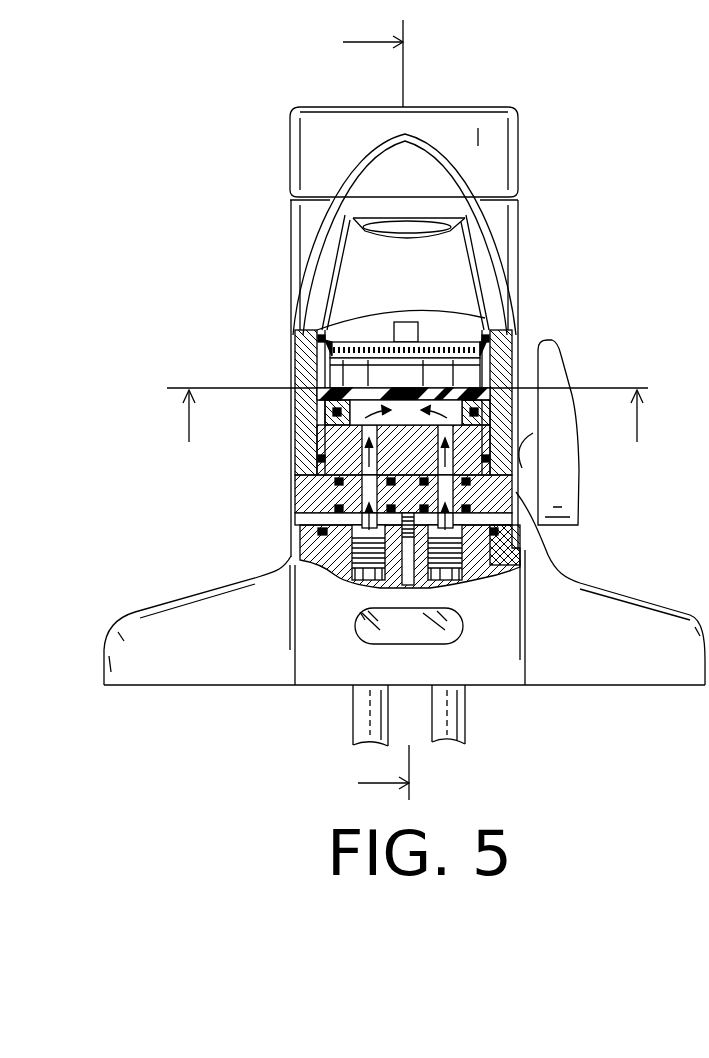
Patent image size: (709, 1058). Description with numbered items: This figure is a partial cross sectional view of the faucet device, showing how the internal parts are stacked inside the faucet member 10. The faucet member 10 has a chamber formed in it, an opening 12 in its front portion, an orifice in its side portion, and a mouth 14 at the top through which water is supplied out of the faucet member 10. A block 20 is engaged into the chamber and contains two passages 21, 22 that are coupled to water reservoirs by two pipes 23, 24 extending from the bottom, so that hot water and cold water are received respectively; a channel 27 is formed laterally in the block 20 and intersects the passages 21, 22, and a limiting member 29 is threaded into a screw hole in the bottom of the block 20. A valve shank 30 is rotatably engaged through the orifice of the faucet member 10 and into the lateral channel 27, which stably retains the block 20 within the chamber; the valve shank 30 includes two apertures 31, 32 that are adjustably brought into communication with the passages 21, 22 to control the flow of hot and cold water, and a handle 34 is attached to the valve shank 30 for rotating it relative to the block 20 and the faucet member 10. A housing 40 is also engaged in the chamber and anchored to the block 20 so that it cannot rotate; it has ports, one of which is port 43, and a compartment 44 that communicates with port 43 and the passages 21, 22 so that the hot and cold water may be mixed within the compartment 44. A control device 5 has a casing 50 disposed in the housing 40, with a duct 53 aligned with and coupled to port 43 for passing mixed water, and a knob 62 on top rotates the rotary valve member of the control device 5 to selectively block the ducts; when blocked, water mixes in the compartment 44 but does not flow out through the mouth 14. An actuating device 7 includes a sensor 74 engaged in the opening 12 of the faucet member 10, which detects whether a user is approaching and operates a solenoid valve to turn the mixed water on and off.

The control device 5 is at (288, 158).
The knob 62 is at (357, 108).
The mouth 14 is at (420, 210).
The faucet member 10 is at (512, 230).
The casing 50 is at (463, 318).
The port 43 is at (372, 343).
The duct 53 is at (350, 356).
The compartment 44 is at (322, 392).
The housing 40 is at (340, 410).
The block 20 is at (325, 458).
The passage 21 is at (340, 470).
The passage 22 is at (448, 441).
The valve shank 30 is at (470, 500).
The channel 27 is at (533, 533).
The limiting member 29 is at (378, 558).
The aperture 31 is at (487, 567).
The aperture 32 is at (297, 560).
The handle 34 is at (553, 363).
The opening 12 is at (457, 642).
The sensor 74 is at (372, 625).
The pipe 23 is at (362, 737).
The pipe 24 is at (458, 740).
The actuating device 7 is at (376, 414).